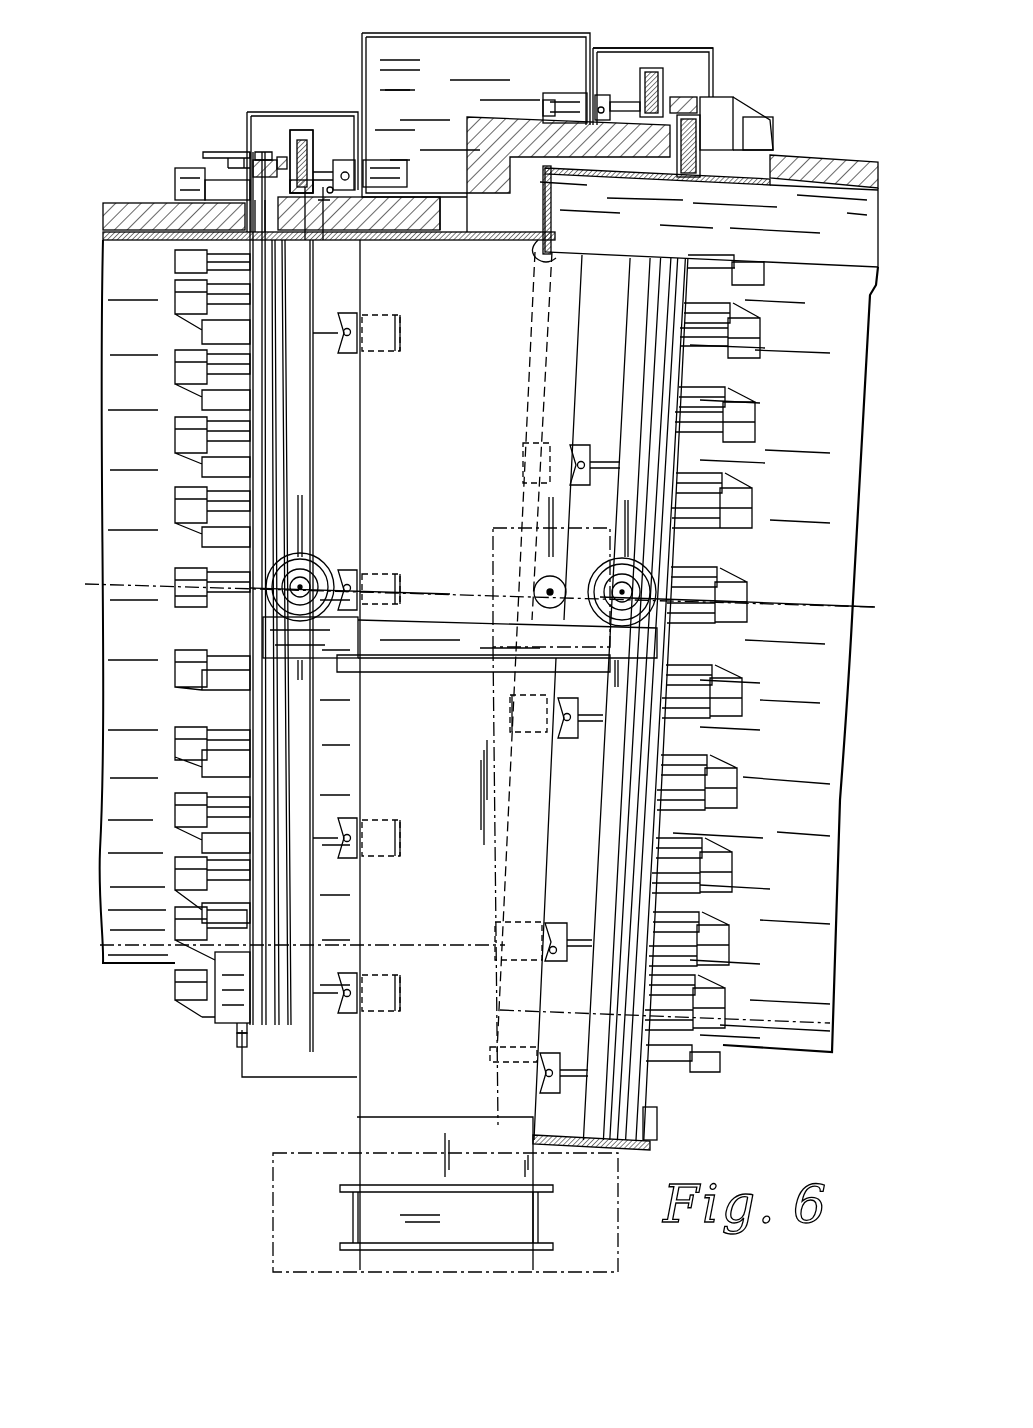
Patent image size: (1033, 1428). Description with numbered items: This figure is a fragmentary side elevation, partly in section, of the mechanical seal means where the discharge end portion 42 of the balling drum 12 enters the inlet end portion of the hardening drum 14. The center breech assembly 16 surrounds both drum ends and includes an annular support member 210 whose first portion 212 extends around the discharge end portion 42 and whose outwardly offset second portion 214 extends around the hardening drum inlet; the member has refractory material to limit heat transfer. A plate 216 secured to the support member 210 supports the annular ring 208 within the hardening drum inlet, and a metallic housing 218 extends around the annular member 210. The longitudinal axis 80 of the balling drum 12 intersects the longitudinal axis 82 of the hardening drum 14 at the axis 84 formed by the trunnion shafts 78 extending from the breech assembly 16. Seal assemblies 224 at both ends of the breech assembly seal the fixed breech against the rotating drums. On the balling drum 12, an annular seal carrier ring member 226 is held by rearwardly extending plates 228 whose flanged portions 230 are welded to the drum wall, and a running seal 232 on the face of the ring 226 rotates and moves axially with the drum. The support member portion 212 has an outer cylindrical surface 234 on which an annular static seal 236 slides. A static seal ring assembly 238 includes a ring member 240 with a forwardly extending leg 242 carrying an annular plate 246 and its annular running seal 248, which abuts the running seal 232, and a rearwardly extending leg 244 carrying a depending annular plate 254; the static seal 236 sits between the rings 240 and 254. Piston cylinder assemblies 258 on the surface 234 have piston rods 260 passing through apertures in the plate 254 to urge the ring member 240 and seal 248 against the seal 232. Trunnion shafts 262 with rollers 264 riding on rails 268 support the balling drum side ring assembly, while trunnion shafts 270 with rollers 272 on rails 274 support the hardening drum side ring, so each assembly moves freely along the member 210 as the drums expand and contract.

The balling drum 12 is at (128, 200).
The hardening drum 14 is at (832, 156).
The center breech assembly 16 is at (582, 32).
The balling drum discharge end portion 42 is at (552, 257).
The trunnion shafts 78 is at (556, 588).
The longitudinal axis of balling drum 80 is at (153, 568).
The longitudinal axis of hardening drum 82 is at (777, 603).
The trunnion shaft axis 84 is at (493, 558).
The annular ring 208 is at (552, 216).
The annular support member 210 is at (473, 110).
The first portion of annular support member 212 is at (452, 165).
The outwardly offset second portion 214 is at (495, 80).
The plate 216 is at (488, 207).
The metallic housing 218 is at (450, 35).
The seal assemblies 224 is at (302, 110).
The annular seal carrier ring member 226 is at (270, 173).
The rearwardly extending plates 228 is at (237, 147).
The flanged portions 230 is at (187, 450).
The running seal 232 is at (262, 157).
The outer cylindrical surface 234 is at (323, 190).
The annular static seal 236 is at (305, 192).
The static seal ring assembly 238 is at (322, 436).
The ring member 240 is at (270, 168).
The forwardly extending leg 242 is at (283, 200).
The rearwardly extending leg 244 is at (307, 138).
The annular plate 246 is at (240, 150).
The annular running seal 248 is at (273, 180).
The annular plate 254 is at (306, 142).
The piston cylinder assemblies 258 is at (382, 153).
The piston rods 260 is at (343, 177).
The trunnion shafts 262 is at (303, 580).
The rollers 264 is at (323, 563).
The rails 268 is at (263, 633).
The trunnion shafts 270 is at (637, 587).
The rollers 272 is at (647, 567).
The rails 274 is at (640, 637).